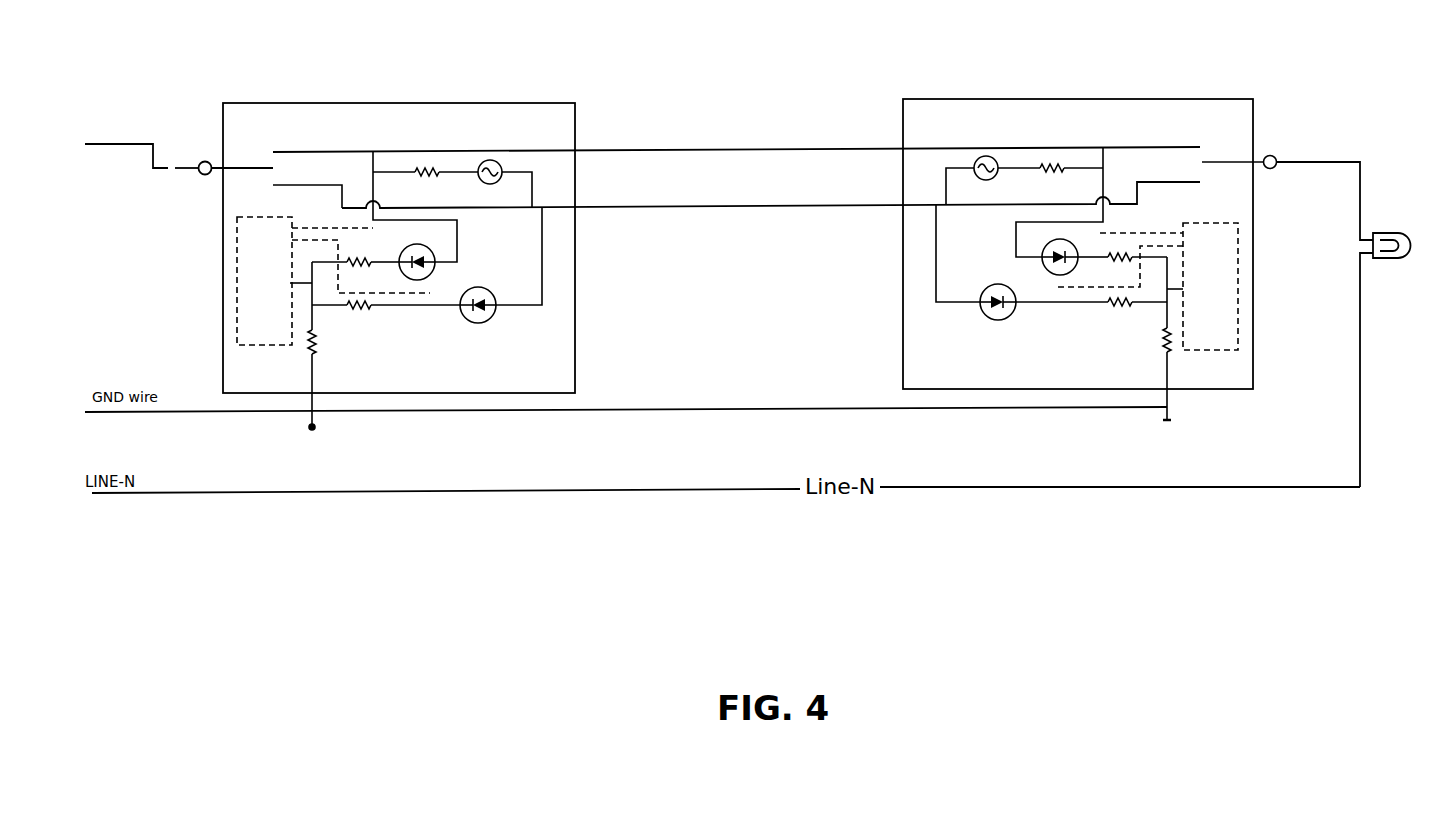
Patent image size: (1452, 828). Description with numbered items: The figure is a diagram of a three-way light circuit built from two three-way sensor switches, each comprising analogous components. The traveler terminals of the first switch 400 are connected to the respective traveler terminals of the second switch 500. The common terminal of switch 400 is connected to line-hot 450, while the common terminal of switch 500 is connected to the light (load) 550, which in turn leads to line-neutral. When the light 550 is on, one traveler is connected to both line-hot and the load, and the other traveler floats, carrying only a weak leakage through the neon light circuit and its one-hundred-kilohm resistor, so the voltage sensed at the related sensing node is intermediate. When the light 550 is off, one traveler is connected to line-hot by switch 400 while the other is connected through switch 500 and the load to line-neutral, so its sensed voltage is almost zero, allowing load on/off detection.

The 3-way sensor switch 400 is at (476, 80).
The line-hot 450 is at (130, 105).
The 3-way sensor switch 500 is at (1200, 84).
The light (load) 550 is at (1413, 217).